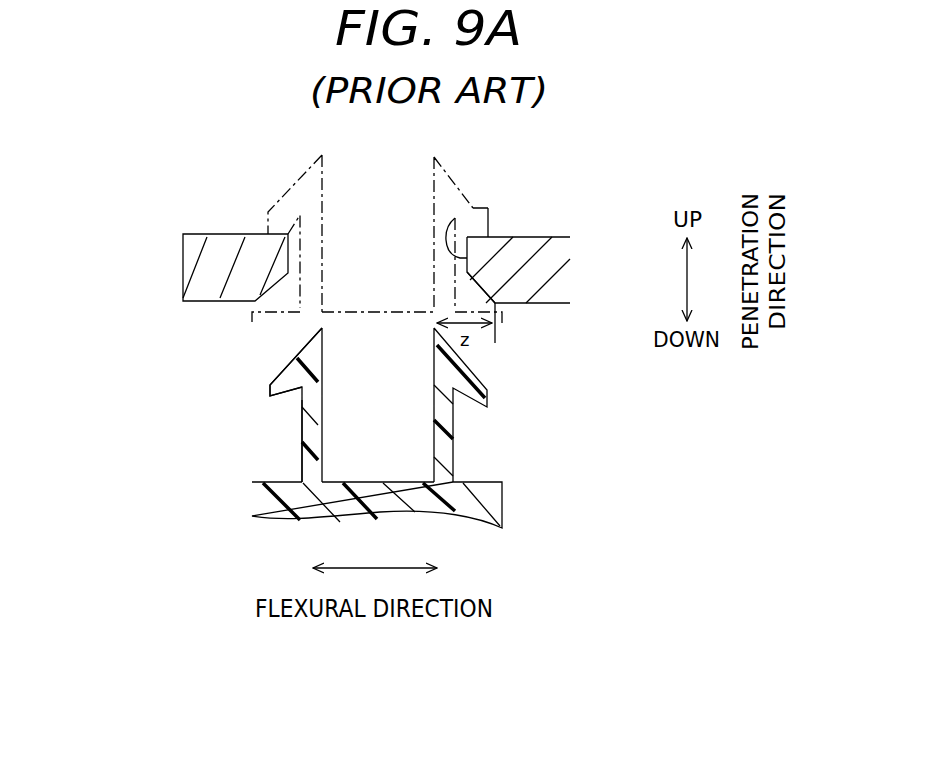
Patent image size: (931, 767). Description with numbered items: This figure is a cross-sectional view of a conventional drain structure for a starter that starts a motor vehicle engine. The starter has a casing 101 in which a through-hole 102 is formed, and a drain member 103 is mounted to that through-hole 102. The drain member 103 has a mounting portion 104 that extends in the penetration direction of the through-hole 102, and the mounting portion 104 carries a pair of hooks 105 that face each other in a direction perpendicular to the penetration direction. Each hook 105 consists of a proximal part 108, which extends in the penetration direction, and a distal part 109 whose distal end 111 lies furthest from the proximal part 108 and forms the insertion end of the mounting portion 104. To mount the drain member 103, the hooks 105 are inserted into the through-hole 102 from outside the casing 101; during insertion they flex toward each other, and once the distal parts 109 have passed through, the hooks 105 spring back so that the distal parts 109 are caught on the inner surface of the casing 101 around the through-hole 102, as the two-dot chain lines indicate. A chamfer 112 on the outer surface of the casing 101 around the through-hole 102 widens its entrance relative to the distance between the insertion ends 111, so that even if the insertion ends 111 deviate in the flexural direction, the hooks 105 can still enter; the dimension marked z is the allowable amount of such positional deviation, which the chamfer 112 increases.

The casing 101 is at (545, 253).
The through-hole 102 is at (470, 212).
The drain member 103 is at (460, 405).
The mounting portion 104 is at (494, 393).
The hooks 105 is at (291, 416).
The proximal part 108 is at (304, 455).
The distal part 109 is at (282, 372).
The distal end 111 is at (318, 322).
The chamfer 112 is at (493, 296).